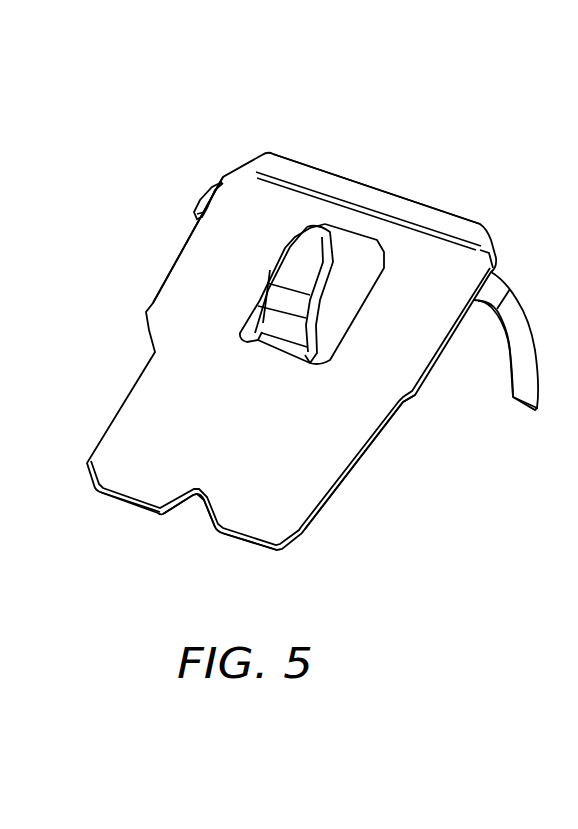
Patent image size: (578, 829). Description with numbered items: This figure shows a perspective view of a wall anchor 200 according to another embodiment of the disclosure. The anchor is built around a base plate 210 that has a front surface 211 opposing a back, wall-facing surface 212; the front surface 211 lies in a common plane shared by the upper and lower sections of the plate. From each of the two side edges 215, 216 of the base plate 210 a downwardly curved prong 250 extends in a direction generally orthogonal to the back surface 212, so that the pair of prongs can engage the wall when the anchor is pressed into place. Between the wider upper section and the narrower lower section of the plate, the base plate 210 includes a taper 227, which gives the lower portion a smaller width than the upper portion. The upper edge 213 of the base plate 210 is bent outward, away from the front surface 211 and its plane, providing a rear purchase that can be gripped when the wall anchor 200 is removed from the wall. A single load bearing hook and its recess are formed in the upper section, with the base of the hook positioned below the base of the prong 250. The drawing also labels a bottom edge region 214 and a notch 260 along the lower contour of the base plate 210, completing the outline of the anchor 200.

The wall anchor 200 is at (218, 106).
The base plate 210 is at (120, 410).
The front surface 211 is at (430, 260).
The back, wall-facing surface 212 is at (107, 523).
The upper edge 213 is at (377, 190).
The bottom edge 214 is at (243, 542).
The side edge 215 is at (325, 505).
The side edge 216 is at (160, 312).
The taper 227 is at (397, 415).
The downwardly curved prong 250 is at (198, 193).
The notch 260 is at (197, 502).